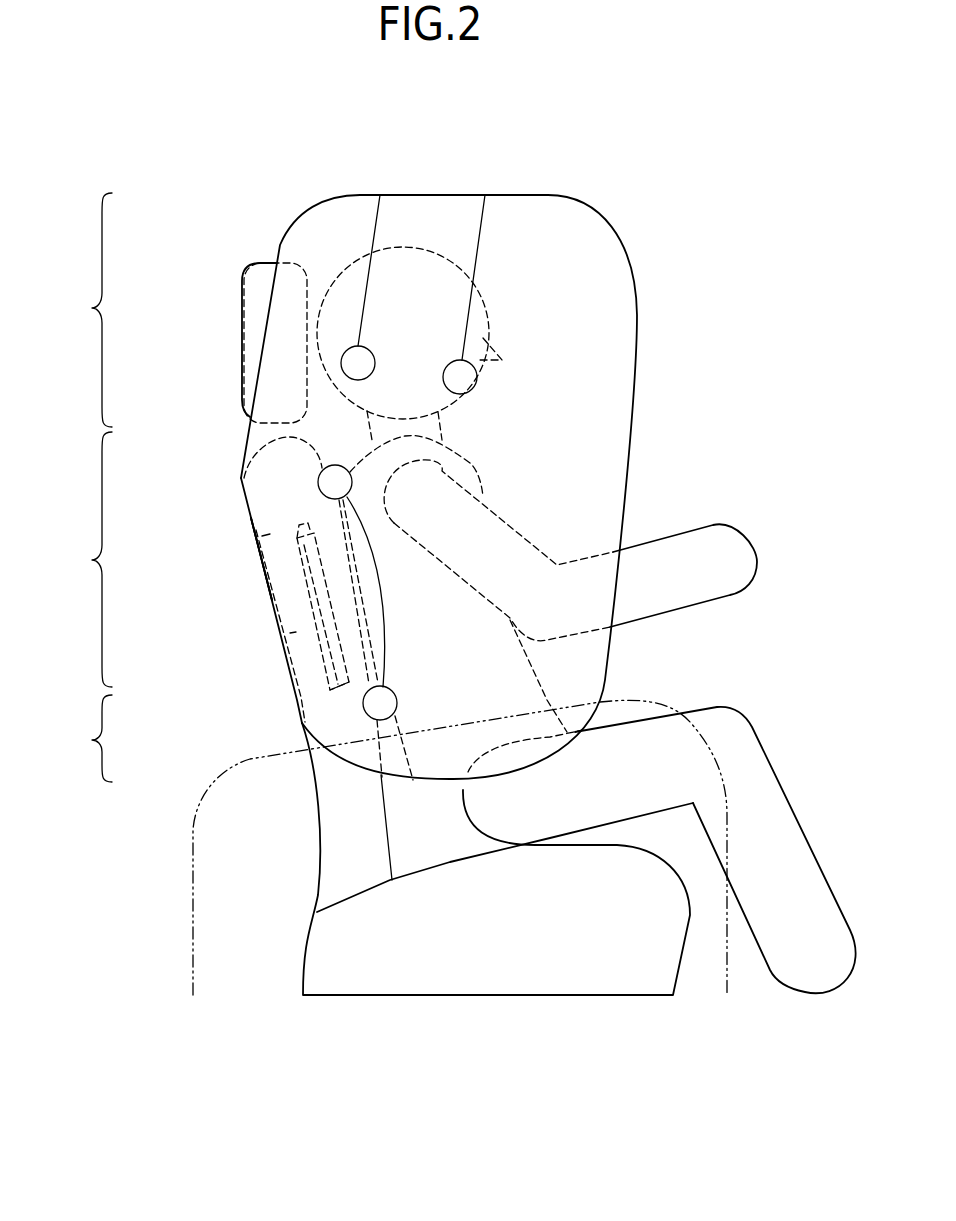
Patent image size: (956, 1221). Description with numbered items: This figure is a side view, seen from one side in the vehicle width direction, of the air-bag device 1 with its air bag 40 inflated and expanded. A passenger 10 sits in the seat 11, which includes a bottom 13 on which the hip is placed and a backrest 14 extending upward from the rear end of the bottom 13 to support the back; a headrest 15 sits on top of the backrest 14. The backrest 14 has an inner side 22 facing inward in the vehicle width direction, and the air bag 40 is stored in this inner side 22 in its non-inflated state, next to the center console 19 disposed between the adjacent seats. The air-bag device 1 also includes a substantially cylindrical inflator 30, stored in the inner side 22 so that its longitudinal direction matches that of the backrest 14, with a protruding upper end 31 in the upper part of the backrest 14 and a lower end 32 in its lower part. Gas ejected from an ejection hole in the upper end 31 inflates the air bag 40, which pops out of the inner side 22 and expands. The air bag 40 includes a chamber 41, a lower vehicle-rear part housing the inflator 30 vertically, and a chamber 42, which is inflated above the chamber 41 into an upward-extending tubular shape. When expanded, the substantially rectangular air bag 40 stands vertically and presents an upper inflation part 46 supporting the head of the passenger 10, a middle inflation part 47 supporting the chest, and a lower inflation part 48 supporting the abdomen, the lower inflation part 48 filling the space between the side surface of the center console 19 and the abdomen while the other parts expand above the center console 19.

The air-bag device 1 is at (282, 188).
The passenger 10 is at (490, 450).
The seat 11 is at (238, 427).
The bottom 13 is at (423, 997).
The backrest 14 is at (261, 559).
The headrest 15 is at (240, 307).
The center console 19 is at (184, 977).
The inner side 22 is at (258, 537).
The inflator 30 is at (307, 568).
The upper end 31 is at (307, 525).
The lower end 32 is at (340, 688).
The air bag 40 is at (614, 221).
The chamber 41 is at (287, 633).
The chamber 42 is at (300, 252).
The upper inflation part 46 is at (84, 310).
The middle inflation part 47 is at (84, 559).
The lower inflation part 48 is at (84, 738).